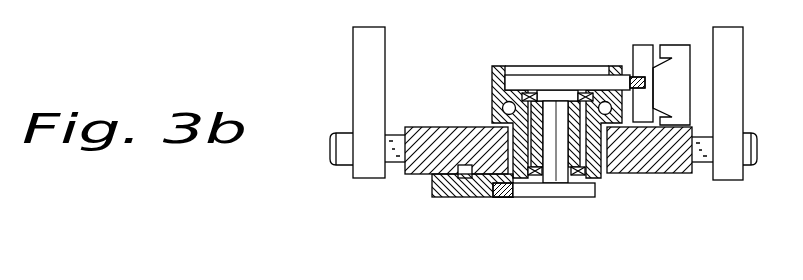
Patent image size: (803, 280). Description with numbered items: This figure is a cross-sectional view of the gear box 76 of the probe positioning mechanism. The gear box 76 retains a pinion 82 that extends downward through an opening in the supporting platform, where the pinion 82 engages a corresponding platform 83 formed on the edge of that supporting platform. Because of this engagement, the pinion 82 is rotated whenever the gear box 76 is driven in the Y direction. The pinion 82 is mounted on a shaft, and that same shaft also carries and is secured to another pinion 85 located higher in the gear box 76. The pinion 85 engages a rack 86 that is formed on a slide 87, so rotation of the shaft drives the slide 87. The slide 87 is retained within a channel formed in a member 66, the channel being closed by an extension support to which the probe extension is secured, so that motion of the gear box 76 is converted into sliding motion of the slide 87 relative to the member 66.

The member 66 is at (684, 46).
The gear box 76 is at (510, 66).
The pinion 82 is at (562, 197).
The platform 83 is at (502, 197).
The pinion 85 is at (571, 75).
The rack 86 is at (633, 77).
The slide 87 is at (648, 46).